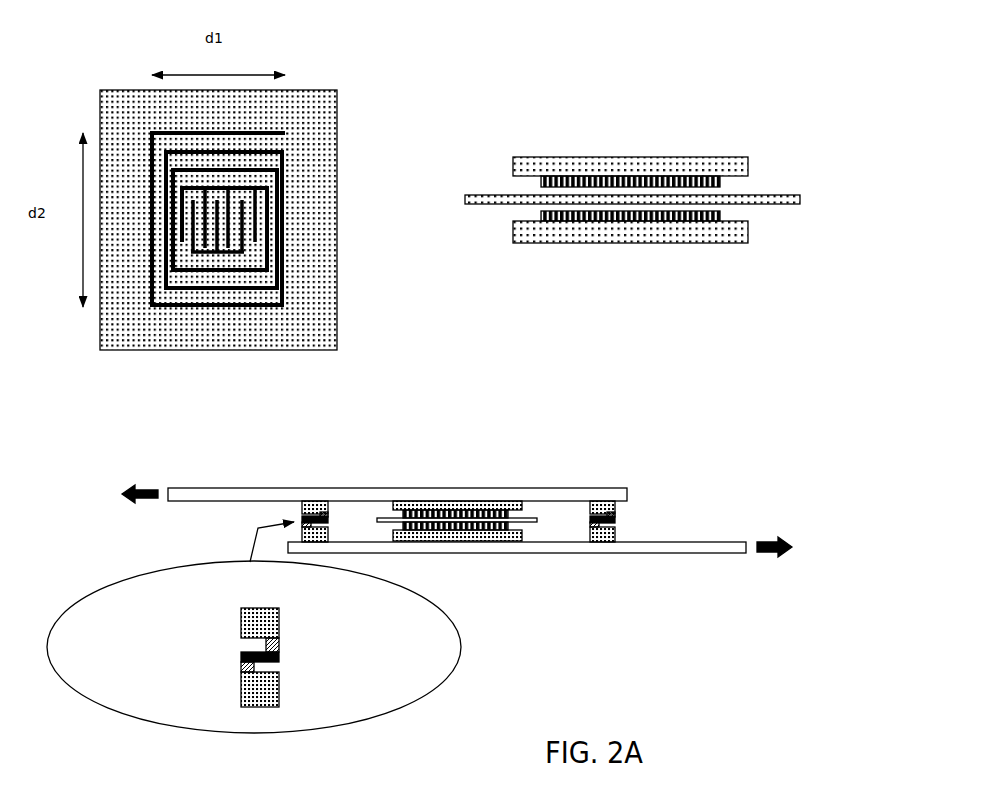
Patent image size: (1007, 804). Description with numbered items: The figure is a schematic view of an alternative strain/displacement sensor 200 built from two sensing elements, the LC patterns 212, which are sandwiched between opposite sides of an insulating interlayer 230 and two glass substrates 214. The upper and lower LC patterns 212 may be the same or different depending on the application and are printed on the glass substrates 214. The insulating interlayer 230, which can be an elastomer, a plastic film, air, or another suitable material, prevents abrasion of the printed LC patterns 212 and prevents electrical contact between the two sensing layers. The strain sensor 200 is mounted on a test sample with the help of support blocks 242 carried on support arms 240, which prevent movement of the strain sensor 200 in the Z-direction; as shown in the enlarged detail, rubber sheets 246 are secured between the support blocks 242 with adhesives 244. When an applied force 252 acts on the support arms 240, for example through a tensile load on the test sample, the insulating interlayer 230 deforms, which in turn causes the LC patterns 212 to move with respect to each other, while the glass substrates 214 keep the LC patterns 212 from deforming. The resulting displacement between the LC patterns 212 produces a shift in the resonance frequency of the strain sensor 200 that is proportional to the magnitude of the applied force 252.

The strain sensor 200 is at (466, 520).
The LC pattern 212 is at (436, 331).
The glass substrate 214 is at (520, 151).
The insulating interlayer 230 is at (780, 209).
The support arms 240 is at (674, 529).
The support blocks 242 is at (281, 624).
The adhesives 244 is at (240, 670).
The rubber sheet 246 is at (240, 655).
The applied force 252 is at (762, 563).